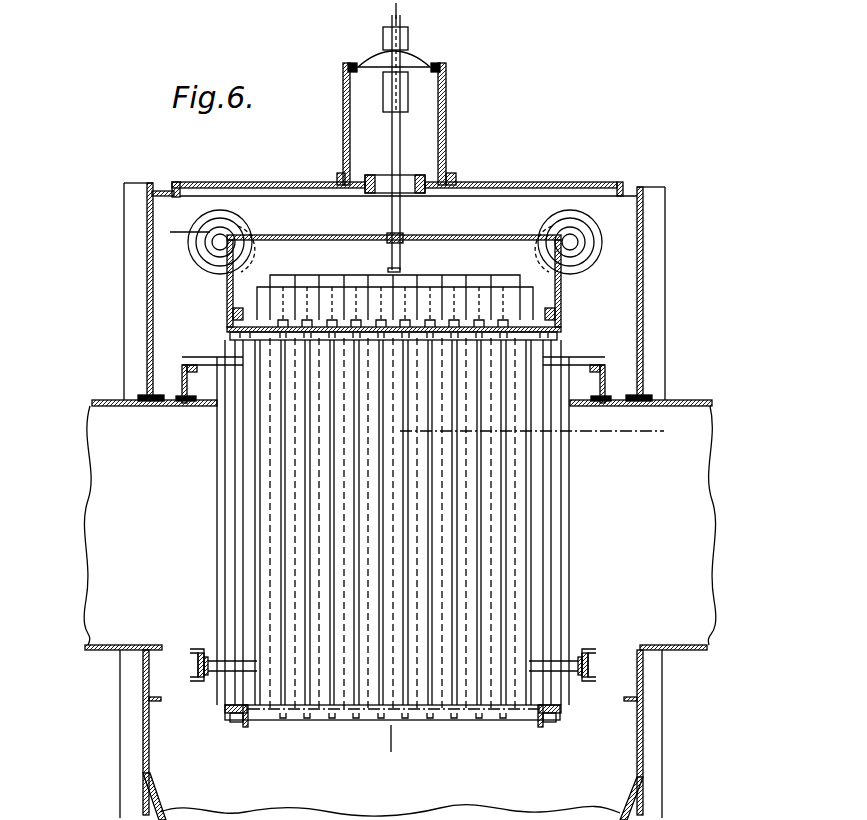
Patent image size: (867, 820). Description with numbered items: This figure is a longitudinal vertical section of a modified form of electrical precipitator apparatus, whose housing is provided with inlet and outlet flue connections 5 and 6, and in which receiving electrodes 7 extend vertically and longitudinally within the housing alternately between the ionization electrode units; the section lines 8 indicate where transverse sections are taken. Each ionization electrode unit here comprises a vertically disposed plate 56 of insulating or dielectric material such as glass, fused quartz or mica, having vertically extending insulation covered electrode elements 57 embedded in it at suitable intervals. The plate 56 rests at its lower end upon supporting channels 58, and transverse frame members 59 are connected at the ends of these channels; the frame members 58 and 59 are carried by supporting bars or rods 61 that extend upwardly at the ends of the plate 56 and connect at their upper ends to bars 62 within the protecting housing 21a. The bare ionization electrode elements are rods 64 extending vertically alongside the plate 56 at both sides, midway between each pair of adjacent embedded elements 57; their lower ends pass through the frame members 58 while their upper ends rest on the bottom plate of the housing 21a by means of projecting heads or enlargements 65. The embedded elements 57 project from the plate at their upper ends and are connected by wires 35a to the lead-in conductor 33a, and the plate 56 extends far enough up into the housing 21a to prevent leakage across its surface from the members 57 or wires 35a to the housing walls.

The inlet flue connection 5 is at (97, 572).
The outlet flue connection 6 is at (688, 620).
The receiving electrode 7 is at (178, 218).
The section line 8- 8 is at (370, 12).
The protecting housing 21a is at (562, 294).
The lead-in conductor 33a is at (398, 230).
The wires 35a is at (437, 278).
The plate of insulating material 56 is at (562, 476).
The embedded electrode elements 57 is at (492, 610).
The supporting channels 58 is at (270, 717).
The transverse frame members 59 is at (233, 725).
The supporting bars or rods 61 is at (243, 506).
The bars 62 is at (231, 322).
The rods 64 is at (506, 557).
The projecting heads or enlargements 65 is at (480, 321).